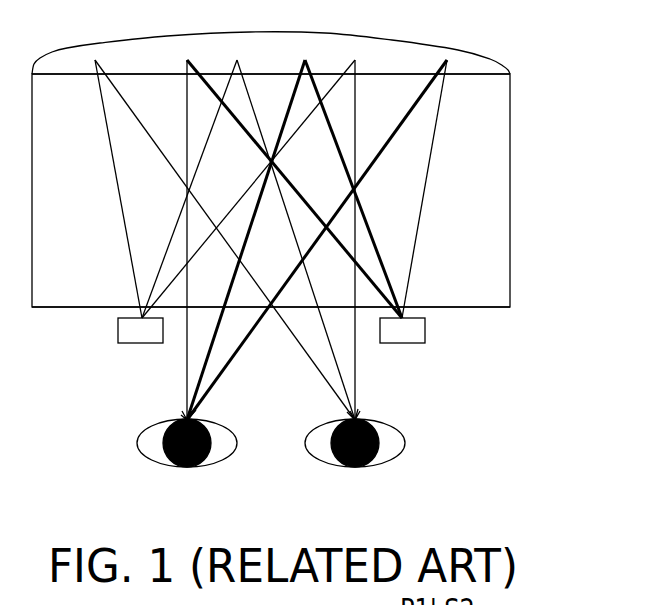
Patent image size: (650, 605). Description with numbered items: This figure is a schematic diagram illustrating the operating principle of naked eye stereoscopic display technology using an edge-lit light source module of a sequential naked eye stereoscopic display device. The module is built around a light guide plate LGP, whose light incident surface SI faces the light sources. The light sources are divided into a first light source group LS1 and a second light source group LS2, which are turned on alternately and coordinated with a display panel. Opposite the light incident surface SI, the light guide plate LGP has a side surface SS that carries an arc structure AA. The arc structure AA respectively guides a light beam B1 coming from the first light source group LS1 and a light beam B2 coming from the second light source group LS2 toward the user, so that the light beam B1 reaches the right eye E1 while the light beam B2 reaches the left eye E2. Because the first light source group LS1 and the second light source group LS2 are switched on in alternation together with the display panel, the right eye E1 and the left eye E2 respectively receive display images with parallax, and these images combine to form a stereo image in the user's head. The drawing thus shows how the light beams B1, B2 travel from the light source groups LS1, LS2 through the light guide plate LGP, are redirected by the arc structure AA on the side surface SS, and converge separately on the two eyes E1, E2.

The light guide plate LGP is at (487, 187).
The arc structure AA is at (394, 57).
The side surface SS is at (481, 74).
The light incident surface SI is at (495, 308).
The first light source group LS1 is at (132, 343).
The second light source group LS2 is at (412, 343).
The light beam B1 is at (125, 228).
The light beam B2 is at (420, 228).
The right eye E1 is at (355, 467).
The left eye E2 is at (188, 467).